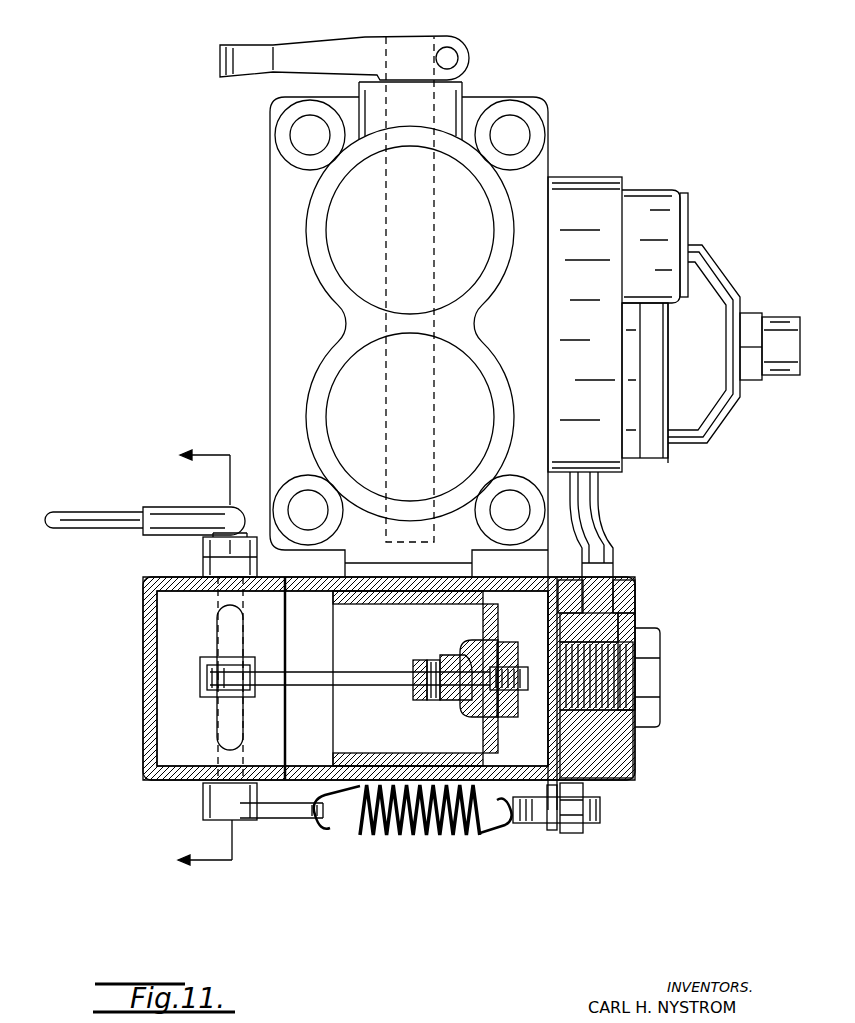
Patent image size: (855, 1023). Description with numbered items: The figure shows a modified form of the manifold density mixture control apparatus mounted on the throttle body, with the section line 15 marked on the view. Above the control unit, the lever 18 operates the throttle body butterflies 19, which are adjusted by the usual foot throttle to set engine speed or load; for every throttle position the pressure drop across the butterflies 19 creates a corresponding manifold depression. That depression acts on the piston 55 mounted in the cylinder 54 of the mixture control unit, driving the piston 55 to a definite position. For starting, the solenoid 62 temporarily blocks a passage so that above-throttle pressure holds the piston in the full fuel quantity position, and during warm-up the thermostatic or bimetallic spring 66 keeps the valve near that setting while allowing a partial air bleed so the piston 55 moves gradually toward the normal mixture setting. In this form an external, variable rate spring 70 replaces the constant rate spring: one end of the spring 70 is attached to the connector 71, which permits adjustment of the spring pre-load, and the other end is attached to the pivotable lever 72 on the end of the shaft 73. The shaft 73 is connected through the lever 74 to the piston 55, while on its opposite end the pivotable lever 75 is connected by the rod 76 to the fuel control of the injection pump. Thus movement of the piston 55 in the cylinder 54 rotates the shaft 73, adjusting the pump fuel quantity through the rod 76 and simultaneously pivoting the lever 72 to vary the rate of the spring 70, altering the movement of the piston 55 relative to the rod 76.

The lines 15 is at (201, 660).
The lever 18 is at (290, 62).
The throttle body butterfly 19 is at (410, 323).
The cylinder 54 is at (305, 767).
The piston 55 is at (387, 760).
The solenoid 62 is at (650, 205).
The thermostatic or bimetallic spring 66 is at (706, 292).
The external spring 70 is at (380, 835).
The connector 71 is at (525, 815).
The pivotable lever 72 is at (283, 817).
The shaft 73 is at (225, 755).
The lever 74 is at (347, 672).
The pivotable lever 75 is at (203, 563).
The rod 76 is at (78, 515).